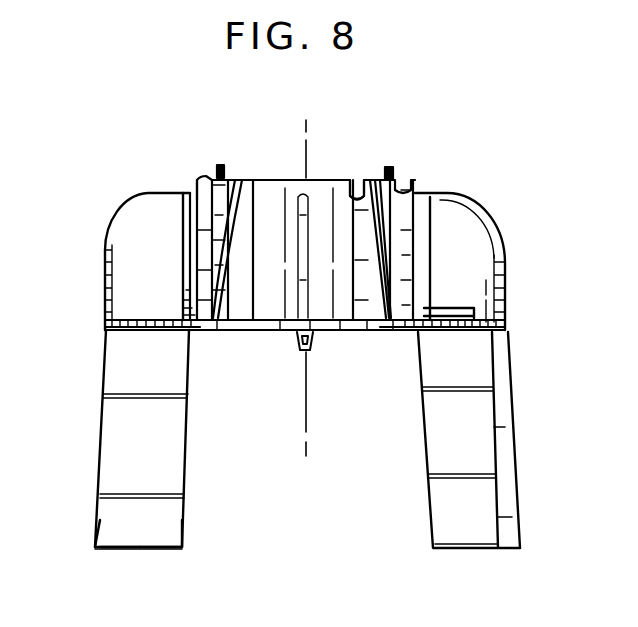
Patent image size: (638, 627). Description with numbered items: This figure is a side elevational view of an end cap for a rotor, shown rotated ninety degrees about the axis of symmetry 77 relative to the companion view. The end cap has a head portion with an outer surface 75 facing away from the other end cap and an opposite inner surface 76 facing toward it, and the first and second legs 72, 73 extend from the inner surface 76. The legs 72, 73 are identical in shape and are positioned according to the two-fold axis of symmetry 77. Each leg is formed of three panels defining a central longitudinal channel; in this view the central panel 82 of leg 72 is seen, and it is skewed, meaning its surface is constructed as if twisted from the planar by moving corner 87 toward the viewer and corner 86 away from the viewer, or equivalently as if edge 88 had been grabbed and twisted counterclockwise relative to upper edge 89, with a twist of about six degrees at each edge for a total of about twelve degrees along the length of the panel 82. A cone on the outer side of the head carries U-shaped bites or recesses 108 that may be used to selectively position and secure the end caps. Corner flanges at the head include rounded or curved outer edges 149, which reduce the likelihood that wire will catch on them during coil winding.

The curved outer edges 149 is at (132, 200).
The axis of symmetry 77 is at (310, 125).
The U-shaped bites or recesses 108 is at (355, 178).
The outer surface 75 is at (128, 322).
The upper edge 89 is at (142, 332).
The inner surface 76 is at (235, 331).
The first leg 72 is at (97, 478).
The second leg 73 is at (517, 485).
The corner 86 is at (95, 546).
The corner 87 is at (182, 546).
The edge 88 is at (117, 548).
The central panel 82 is at (142, 532).